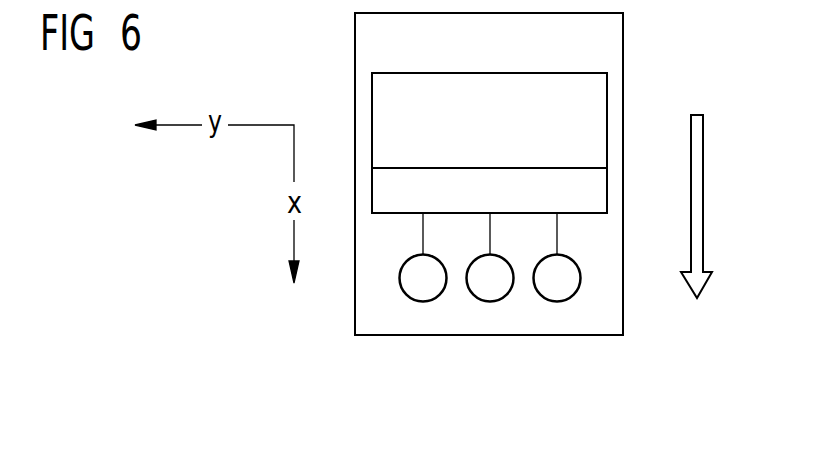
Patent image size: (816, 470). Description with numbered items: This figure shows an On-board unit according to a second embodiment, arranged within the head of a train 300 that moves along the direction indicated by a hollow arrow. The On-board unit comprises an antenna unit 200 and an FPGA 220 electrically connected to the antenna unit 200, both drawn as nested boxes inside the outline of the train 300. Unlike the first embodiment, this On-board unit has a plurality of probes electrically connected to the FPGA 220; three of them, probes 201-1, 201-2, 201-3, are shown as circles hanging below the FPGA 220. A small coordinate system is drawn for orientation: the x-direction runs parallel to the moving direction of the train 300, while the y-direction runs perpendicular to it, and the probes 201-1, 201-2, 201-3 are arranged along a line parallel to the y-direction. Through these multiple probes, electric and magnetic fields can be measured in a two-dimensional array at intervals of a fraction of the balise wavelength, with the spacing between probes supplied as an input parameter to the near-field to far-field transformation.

The train 300 is at (512, 53).
The antenna unit 200 is at (512, 136).
The FPGA 220 is at (512, 205).
The probe 201-1 is at (418, 302).
The probe 201-2 is at (490, 302).
The probe 201-3 is at (560, 302).